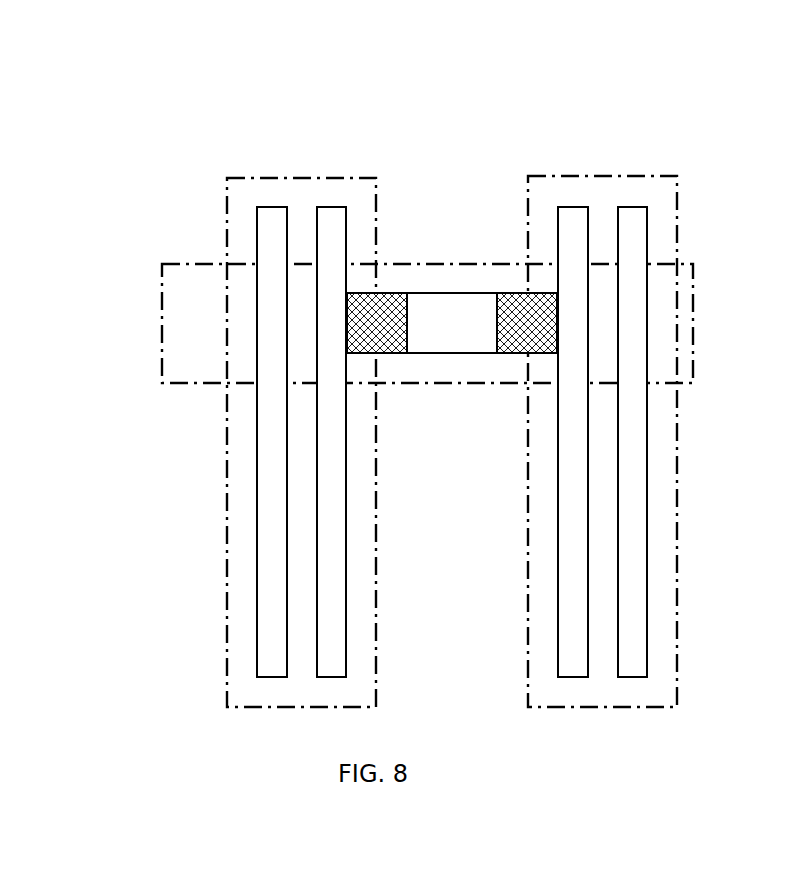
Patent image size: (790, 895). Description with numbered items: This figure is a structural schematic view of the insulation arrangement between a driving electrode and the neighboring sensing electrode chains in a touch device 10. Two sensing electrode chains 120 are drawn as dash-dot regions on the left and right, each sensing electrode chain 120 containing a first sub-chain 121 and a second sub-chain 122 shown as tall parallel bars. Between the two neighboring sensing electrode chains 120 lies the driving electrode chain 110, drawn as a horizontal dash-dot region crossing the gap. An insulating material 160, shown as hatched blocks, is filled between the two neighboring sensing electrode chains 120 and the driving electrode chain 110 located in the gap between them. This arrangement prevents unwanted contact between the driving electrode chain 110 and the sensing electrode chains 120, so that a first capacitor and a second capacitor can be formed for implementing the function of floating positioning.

The semiconductor device 10 is at (467, 55).
The driving electrode chain 110 is at (160, 317).
The sensing electrode chain 120 is at (227, 223).
The first sub-chain 121 is at (277, 210).
The second sub-chain 122 is at (332, 210).
The insulating material 160 is at (515, 296).